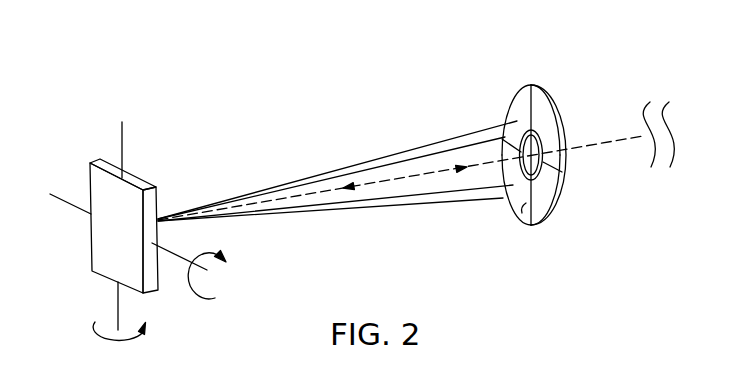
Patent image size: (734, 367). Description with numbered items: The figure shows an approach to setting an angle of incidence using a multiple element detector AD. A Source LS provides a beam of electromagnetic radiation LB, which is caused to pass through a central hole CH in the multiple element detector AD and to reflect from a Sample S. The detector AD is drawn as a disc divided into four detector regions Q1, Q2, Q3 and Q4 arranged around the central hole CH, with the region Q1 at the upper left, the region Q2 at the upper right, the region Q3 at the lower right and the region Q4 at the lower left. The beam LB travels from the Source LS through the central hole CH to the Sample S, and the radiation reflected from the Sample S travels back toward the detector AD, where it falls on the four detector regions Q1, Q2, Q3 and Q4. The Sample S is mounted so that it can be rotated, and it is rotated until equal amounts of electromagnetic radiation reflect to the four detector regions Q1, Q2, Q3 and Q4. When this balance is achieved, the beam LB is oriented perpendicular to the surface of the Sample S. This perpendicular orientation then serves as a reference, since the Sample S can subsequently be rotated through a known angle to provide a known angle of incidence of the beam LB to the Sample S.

The Sample S is at (110, 230).
The multiple element detector AD is at (538, 64).
The detector region Q1 is at (506, 93).
The detector region Q2 is at (556, 93).
The detector region Q3 is at (554, 212).
The detector region Q4 is at (507, 220).
The central hole CH is at (547, 133).
The Source LS is at (673, 134).
The beam of electromagnetic radiation LB is at (596, 151).